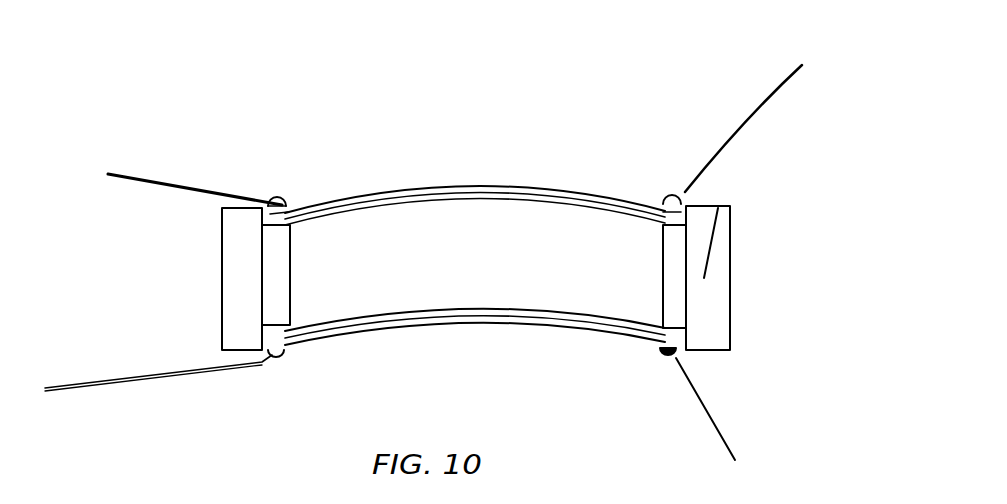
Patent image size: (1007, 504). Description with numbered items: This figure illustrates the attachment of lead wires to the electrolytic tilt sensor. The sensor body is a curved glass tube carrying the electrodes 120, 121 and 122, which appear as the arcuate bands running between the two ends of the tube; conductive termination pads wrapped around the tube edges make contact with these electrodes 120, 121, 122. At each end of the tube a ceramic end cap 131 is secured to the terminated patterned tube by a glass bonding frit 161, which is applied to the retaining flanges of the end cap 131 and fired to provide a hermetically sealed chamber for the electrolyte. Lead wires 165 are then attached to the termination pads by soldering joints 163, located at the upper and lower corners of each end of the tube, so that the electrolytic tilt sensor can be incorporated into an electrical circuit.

The electrode 120 is at (399, 208).
The electrode 121 is at (599, 206).
The electrode 122 is at (503, 280).
The ceramic end cap 131 is at (250, 262).
The glass bonding frit 161 is at (292, 208).
The soldering joint 163 is at (281, 190).
The lead wire 165 is at (152, 152).